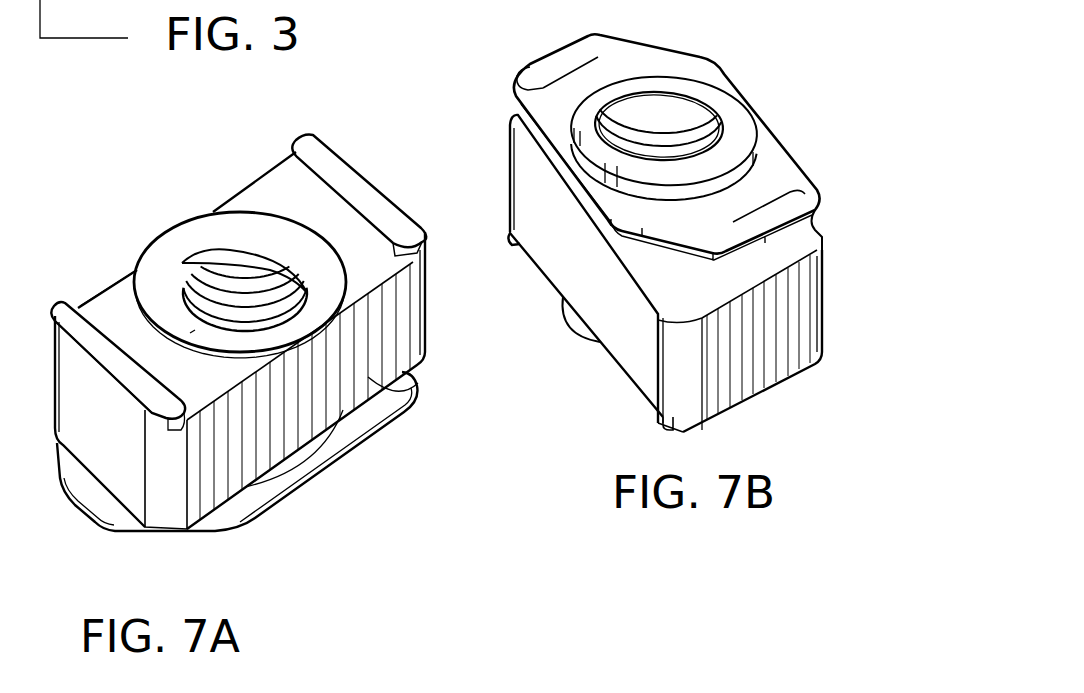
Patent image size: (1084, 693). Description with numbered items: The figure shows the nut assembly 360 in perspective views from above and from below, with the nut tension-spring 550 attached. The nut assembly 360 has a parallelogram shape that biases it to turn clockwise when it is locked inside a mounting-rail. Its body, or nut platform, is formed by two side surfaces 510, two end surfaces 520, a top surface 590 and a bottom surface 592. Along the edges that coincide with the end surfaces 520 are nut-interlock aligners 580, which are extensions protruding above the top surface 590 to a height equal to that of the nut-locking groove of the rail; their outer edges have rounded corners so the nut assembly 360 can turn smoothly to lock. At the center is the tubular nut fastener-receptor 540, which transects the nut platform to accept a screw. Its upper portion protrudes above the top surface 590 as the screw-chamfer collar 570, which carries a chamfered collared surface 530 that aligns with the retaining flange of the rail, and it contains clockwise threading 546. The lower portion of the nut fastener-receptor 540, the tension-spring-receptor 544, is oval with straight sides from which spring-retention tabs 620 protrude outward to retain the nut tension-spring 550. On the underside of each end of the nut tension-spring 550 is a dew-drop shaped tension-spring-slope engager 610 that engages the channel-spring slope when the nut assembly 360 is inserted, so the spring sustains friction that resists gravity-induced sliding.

In FIG. 7A, the nut assembly 360 is at (192, 114).
In FIG. 7A, the side surface 510 is at (403, 337).
In FIG. 7B, the side surface 510 is at (633, 360).
In FIG. 7A, the end surface 520 is at (73, 433).
In FIG. 7B, the end surface 520 is at (763, 383).
In FIG. 7A, the collared surface 530 is at (190, 237).
In FIG. 7A, the nut fastener-receptor 540 is at (184, 175).
In FIG. 7B, the tension-spring-receptor 544 is at (732, 147).
In FIG. 7A, the threading 546 is at (260, 262).
In FIG. 7A, the nut tension-spring 550 is at (383, 420).
In FIG. 7A, the screw-chamfer collar 570 is at (190, 333).
In FIG. 7A, the nut-interlock aligner 580 is at (75, 320).
In FIG. 7A, the top surface 590 is at (120, 297).
In FIG. 7B, the bottom surface 592 is at (814, 226).
In FIG. 7B, the tension-spring-slope engager 610 is at (557, 63).
In FIG. 7B, the spring-retention tab 620 is at (735, 108).